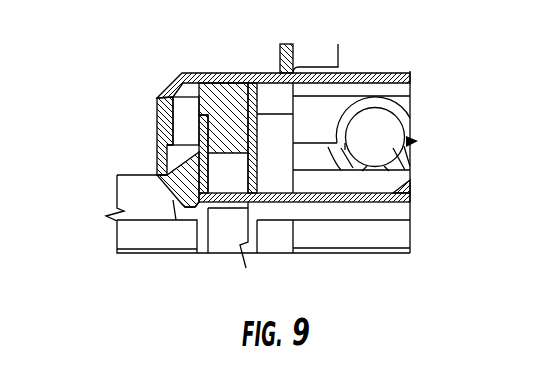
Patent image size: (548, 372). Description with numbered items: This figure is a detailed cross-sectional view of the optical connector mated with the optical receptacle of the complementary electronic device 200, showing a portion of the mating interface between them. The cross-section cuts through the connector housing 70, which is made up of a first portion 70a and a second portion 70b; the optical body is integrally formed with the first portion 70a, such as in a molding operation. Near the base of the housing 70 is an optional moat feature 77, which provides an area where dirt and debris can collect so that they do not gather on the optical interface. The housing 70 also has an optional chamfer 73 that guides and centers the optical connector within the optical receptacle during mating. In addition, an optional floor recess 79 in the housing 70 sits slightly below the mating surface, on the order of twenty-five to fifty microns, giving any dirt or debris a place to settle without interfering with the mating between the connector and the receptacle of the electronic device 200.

The housing 70 is at (70, 42).
The first portion 70a is at (157, 145).
The second portion 70b is at (174, 83).
The chamfer 73 is at (168, 194).
The moat feature 77 is at (171, 199).
The floor recess 79 is at (390, 192).
The electronic device 200 is at (141, 218).